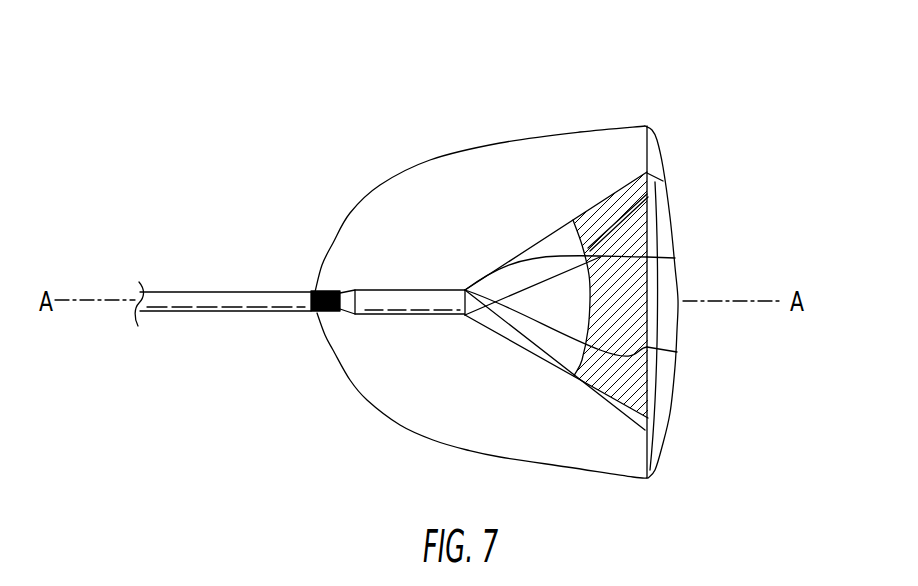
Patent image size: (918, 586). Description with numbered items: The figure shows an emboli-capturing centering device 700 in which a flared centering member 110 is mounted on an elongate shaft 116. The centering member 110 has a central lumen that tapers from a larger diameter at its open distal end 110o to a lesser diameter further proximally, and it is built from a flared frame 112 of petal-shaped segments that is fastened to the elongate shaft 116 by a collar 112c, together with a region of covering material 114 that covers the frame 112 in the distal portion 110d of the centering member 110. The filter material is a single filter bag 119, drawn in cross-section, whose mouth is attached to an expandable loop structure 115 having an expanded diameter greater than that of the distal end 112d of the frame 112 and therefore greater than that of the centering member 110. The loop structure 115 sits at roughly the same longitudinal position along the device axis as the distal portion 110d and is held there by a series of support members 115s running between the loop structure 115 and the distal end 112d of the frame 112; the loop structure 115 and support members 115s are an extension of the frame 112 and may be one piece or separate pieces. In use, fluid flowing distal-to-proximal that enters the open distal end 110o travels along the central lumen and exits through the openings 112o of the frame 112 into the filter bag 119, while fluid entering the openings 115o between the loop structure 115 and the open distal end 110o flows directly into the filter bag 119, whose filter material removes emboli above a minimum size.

The emboli-capturing centering device 700 is at (648, 64).
The elongate shaft 116 is at (224, 300).
The collar 112c is at (352, 291).
The filter bag 119 is at (570, 133).
The flared centering member 110 is at (560, 212).
The covering material 114 is at (602, 232).
The flared frame 112 is at (528, 257).
The openings of the frame 112o is at (532, 338).
The distal end of the frame 112d is at (657, 257).
The distal portion of the centering member 110d is at (668, 210).
The open distal end of the centering member 110o is at (672, 323).
The expandable loop structure 115 is at (662, 380).
The openings between the loop structure and the open distal end 115o is at (665, 387).
The support members 115s is at (648, 418).